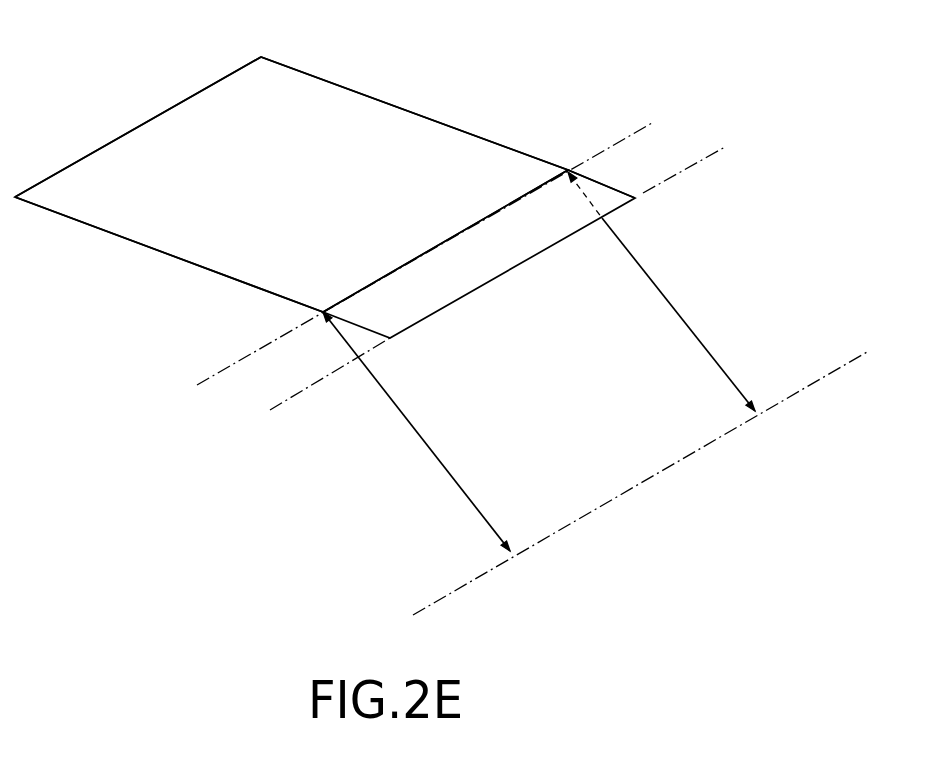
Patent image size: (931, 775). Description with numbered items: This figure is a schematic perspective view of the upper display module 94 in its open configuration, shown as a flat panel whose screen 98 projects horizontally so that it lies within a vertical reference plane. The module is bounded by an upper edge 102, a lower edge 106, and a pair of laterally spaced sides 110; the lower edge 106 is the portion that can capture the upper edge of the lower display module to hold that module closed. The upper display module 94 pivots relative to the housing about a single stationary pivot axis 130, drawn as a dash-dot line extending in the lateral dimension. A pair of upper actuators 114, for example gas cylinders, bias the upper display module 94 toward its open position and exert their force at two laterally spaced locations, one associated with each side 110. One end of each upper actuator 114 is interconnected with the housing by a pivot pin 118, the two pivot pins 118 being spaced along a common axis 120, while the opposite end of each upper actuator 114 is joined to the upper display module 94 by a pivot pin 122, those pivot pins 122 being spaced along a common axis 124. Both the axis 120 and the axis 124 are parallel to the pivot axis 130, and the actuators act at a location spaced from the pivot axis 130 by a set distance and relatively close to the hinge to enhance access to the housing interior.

The upper display module 94 is at (480, 140).
The screen 98 is at (370, 150).
The upper edge 102 is at (503, 275).
The lower edge 106 is at (115, 138).
The sides 110 is at (545, 161).
The upper actuators 114 is at (448, 468).
The pivot pin 118 is at (515, 553).
The common axis 120 is at (427, 606).
The pivot pin 122 is at (571, 170).
The common axis 124 is at (247, 357).
The pivot axis 130 is at (290, 397).